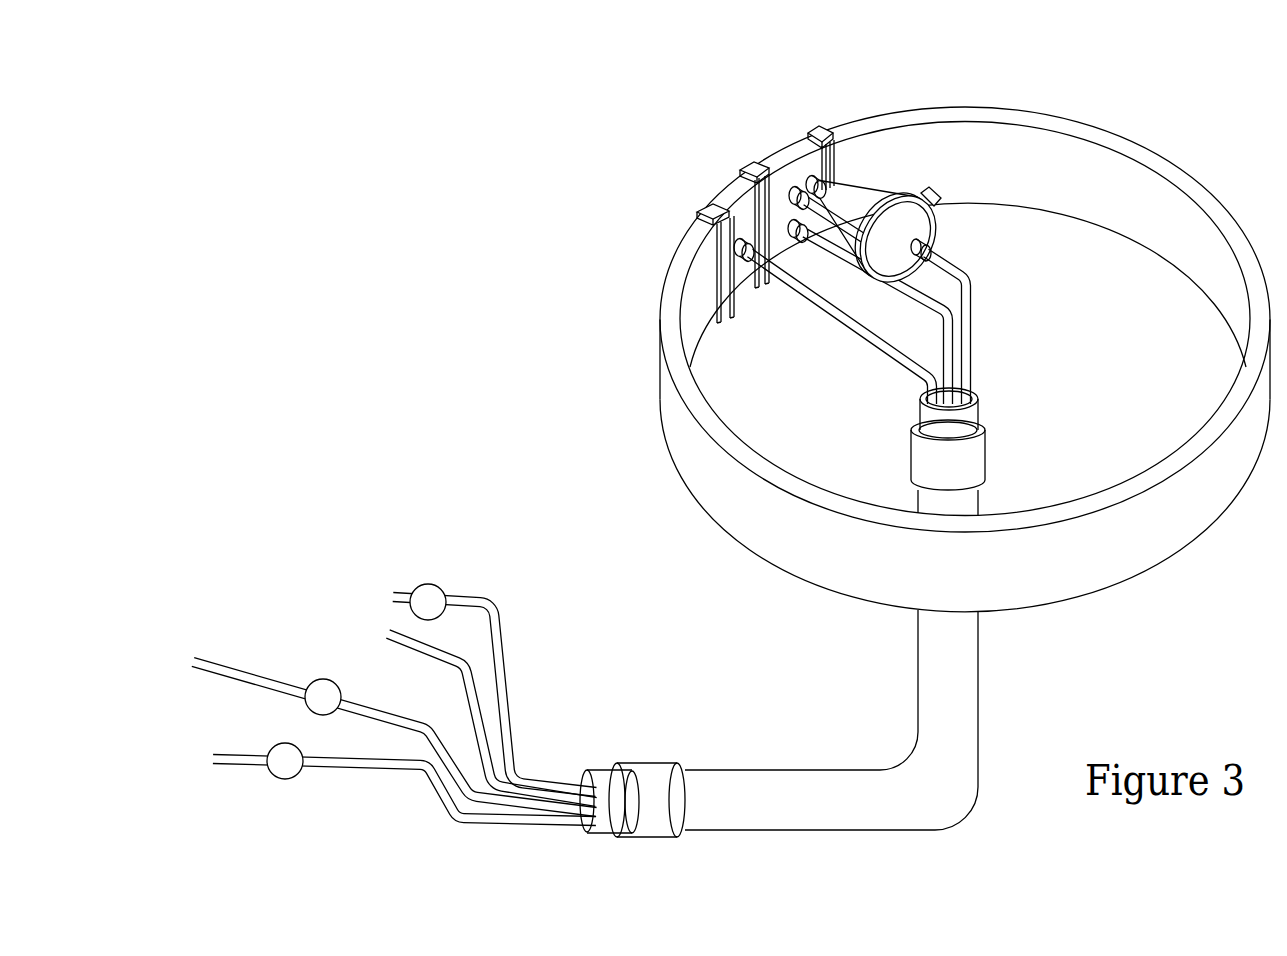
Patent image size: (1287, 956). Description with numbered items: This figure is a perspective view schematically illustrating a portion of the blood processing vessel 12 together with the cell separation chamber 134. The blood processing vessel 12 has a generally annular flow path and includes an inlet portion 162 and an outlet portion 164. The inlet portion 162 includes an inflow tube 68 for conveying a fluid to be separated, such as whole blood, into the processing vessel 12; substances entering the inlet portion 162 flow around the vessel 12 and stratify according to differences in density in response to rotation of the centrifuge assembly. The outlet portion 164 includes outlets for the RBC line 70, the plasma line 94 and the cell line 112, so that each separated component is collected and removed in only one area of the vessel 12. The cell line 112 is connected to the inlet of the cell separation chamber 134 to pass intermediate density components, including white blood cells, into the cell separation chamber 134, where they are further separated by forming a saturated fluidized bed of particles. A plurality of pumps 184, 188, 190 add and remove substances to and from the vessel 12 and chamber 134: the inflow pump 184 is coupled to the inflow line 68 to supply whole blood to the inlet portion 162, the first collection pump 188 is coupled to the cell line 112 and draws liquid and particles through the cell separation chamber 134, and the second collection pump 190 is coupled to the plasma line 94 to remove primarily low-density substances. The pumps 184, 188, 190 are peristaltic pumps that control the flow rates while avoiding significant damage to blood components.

The blood processing vessel 12 is at (476, 273).
The inflow tube 68 is at (843, 324).
The RBC line 70 is at (806, 200).
The plasma line 94 is at (910, 320).
The cell line 112 is at (810, 196).
The cell separation chamber 134 is at (886, 199).
The inlet portion 162 is at (698, 192).
The outlet portion 164 is at (795, 125).
The inflow pump 184 is at (440, 583).
The first collection pump 188 is at (267, 750).
The second collection pump 190 is at (313, 682).